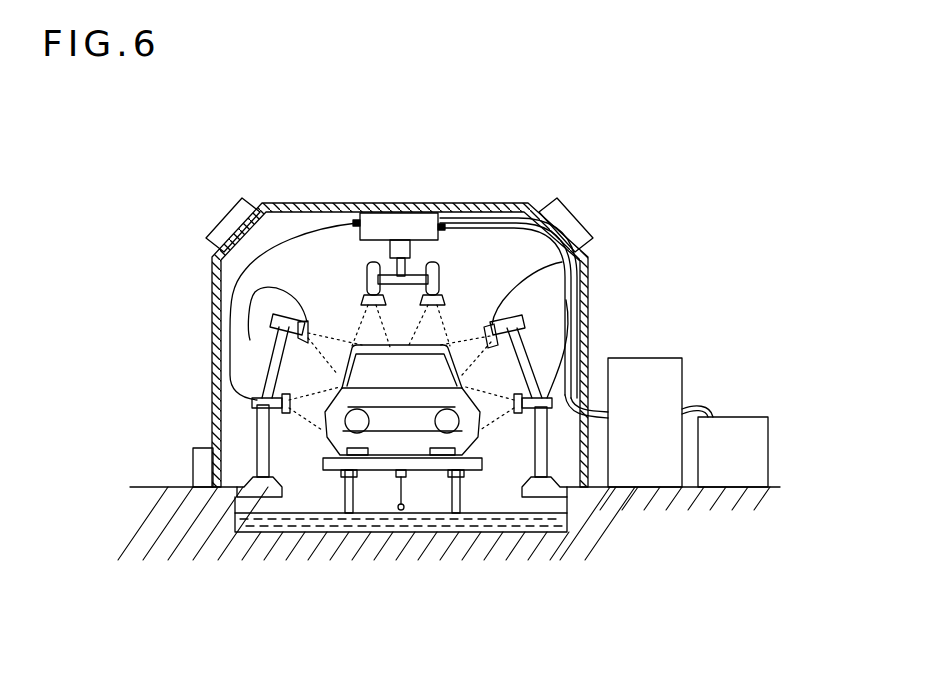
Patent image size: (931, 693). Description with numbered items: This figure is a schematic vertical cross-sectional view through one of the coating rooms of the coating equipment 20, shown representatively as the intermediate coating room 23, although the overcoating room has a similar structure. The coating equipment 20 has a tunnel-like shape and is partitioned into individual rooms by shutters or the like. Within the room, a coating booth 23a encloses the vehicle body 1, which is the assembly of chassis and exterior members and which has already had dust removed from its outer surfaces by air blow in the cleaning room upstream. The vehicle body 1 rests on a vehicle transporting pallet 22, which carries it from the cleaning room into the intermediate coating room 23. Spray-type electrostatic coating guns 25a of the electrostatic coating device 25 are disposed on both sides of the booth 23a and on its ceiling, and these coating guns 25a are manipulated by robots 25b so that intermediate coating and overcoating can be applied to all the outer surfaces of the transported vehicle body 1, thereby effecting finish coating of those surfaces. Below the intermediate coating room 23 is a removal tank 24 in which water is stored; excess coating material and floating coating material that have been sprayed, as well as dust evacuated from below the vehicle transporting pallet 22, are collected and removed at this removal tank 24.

The vehicle body 1 is at (467, 437).
The coating equipment 20 is at (599, 146).
The vehicle transporting pallet 22 is at (328, 472).
The intermediate coating room 23 is at (318, 256).
The coating booth 23a is at (511, 275).
The removal tank 24 is at (424, 520).
The electrostatic coating device 25 is at (401, 221).
The electrostatic coating guns 25a is at (366, 293).
The robots 25b is at (446, 222).